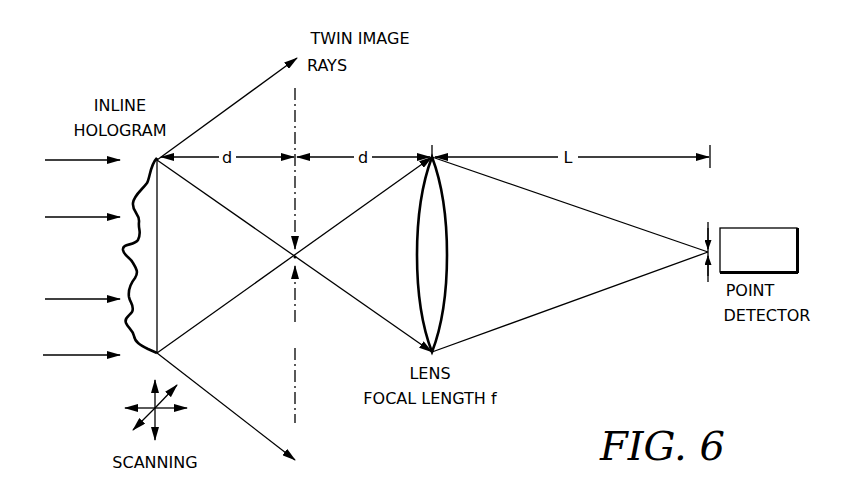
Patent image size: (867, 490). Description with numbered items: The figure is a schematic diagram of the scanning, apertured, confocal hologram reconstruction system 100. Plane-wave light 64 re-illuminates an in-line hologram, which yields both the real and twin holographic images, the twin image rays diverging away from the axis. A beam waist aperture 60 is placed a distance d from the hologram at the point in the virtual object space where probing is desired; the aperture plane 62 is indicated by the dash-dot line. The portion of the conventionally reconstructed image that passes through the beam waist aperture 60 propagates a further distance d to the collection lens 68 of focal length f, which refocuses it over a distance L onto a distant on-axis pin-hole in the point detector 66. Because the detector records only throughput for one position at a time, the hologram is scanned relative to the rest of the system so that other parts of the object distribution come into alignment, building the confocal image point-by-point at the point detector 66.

The incident reference beam 64 is at (45, 219).
The confocal hologram reconstruction system 100 is at (427, 107).
The aperture 62 is at (297, 416).
The beam waist aperture 60 is at (301, 257).
The collection lens 68 is at (443, 255).
The point detector 66 is at (753, 235).